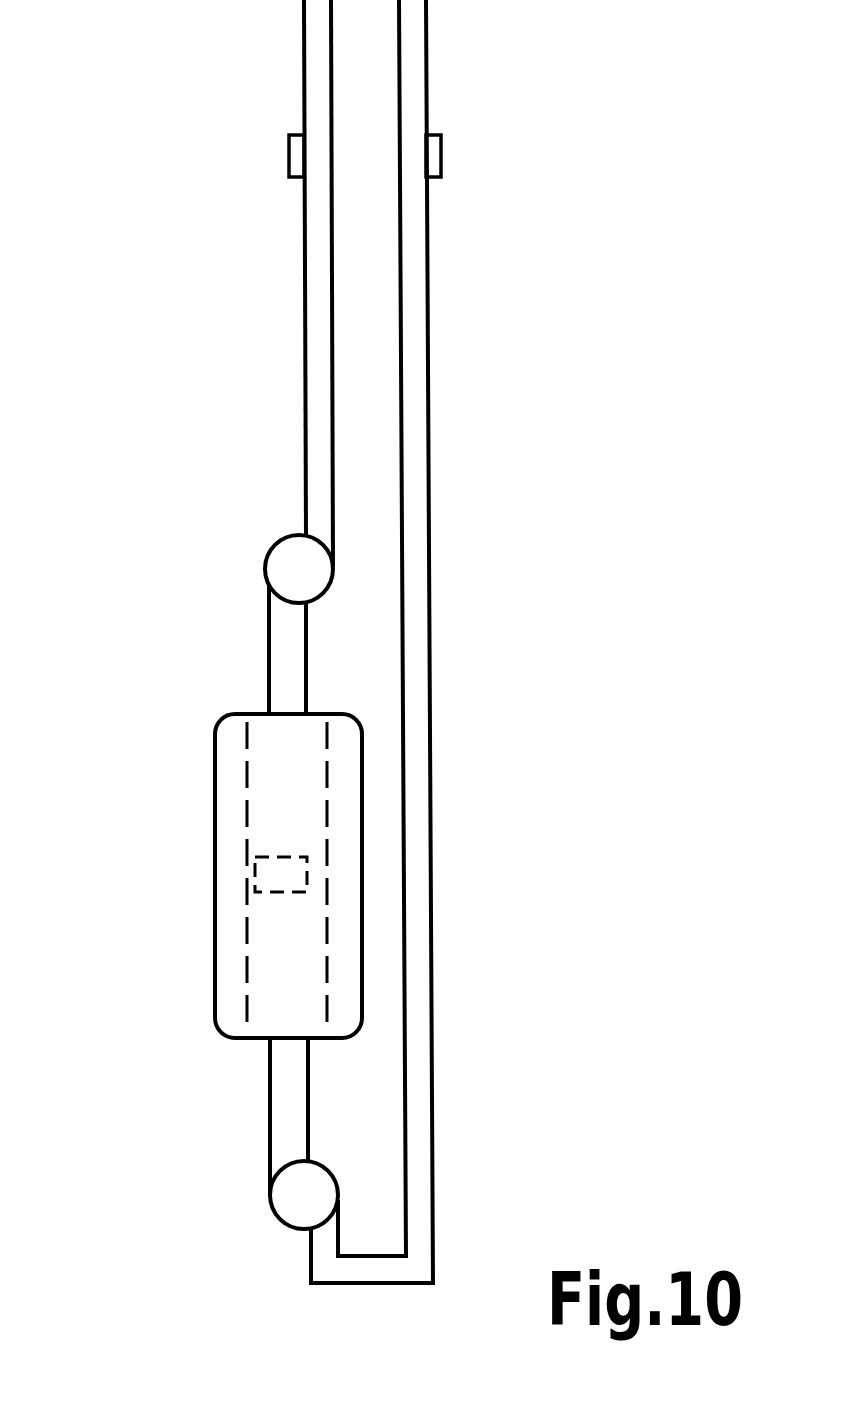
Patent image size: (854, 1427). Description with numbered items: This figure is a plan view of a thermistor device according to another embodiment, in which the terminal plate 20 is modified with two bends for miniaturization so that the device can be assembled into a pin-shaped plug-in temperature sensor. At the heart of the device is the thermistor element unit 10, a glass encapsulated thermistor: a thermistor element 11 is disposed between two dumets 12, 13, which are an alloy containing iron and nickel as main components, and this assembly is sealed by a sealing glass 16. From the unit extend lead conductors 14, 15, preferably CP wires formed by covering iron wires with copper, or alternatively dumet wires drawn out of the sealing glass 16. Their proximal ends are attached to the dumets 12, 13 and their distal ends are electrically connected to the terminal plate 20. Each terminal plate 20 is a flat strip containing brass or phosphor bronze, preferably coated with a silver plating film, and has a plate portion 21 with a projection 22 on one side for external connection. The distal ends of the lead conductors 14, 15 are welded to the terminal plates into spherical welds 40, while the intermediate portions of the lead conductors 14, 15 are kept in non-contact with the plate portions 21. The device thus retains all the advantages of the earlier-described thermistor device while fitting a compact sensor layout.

The thermistor element unit 10 is at (215, 745).
The thermistor element 11 is at (288, 873).
The dumet 12 is at (265, 963).
The dumet 13 is at (265, 789).
The lead conductor 14 is at (270, 1113).
The lead conductor 15 is at (269, 648).
The sealing glass 16 is at (343, 880).
The terminal plate 20 is at (304, 75).
The plate portion 21 is at (305, 286).
The projection 22 is at (289, 157).
The spherical weld 40 is at (290, 559).